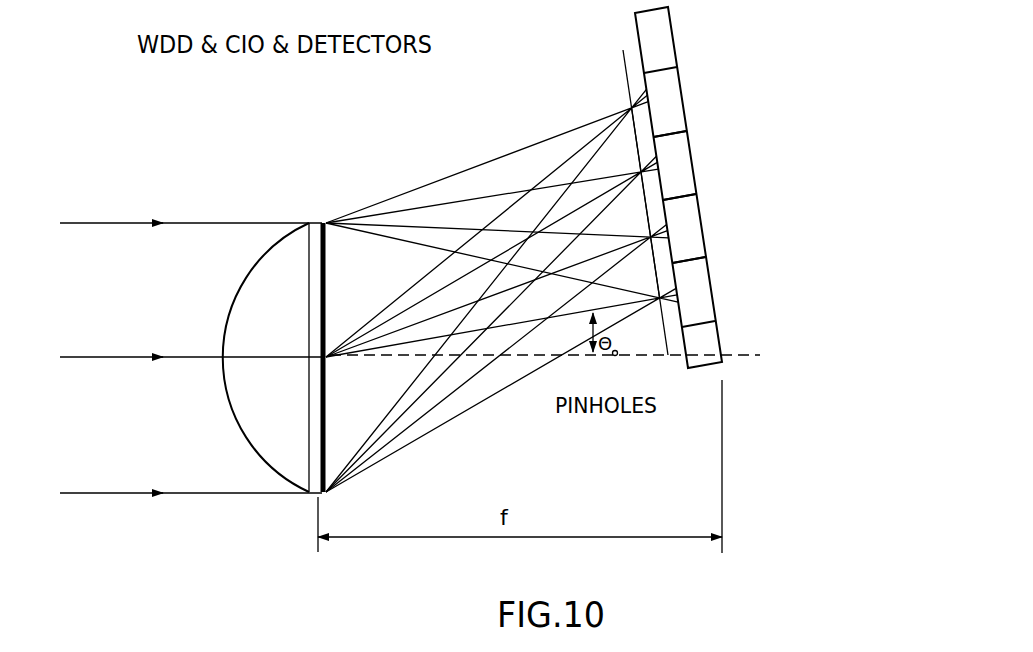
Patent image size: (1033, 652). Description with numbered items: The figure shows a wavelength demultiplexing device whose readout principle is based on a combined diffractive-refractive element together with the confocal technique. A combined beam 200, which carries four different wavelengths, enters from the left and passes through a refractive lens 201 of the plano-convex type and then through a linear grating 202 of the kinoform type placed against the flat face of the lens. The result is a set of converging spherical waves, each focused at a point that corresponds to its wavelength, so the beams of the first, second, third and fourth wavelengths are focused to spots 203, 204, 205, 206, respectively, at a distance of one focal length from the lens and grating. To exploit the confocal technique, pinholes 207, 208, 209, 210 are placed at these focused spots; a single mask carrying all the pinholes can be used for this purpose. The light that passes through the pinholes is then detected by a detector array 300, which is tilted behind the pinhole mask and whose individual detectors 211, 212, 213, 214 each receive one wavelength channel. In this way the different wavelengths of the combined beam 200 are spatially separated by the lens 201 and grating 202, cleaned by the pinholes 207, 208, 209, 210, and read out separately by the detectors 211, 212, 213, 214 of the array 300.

The combined beam 200 is at (117, 355).
The refractive lens 201 is at (250, 267).
The linear grating 202 is at (297, 497).
The focused spot 203 is at (636, 267).
The focused spot 204 is at (627, 204).
The focused spot 205 is at (619, 143).
The focused spot 206 is at (609, 82).
The pinhole 207 is at (652, 312).
The pinhole 208 is at (637, 342).
The pinhole 209 is at (604, 323).
The pinhole 210 is at (635, 291).
The detector 211 is at (700, 293).
The detector 212 is at (695, 227).
The detector 213 is at (685, 170).
The detector 214 is at (670, 107).
The detector array 300 is at (767, 373).